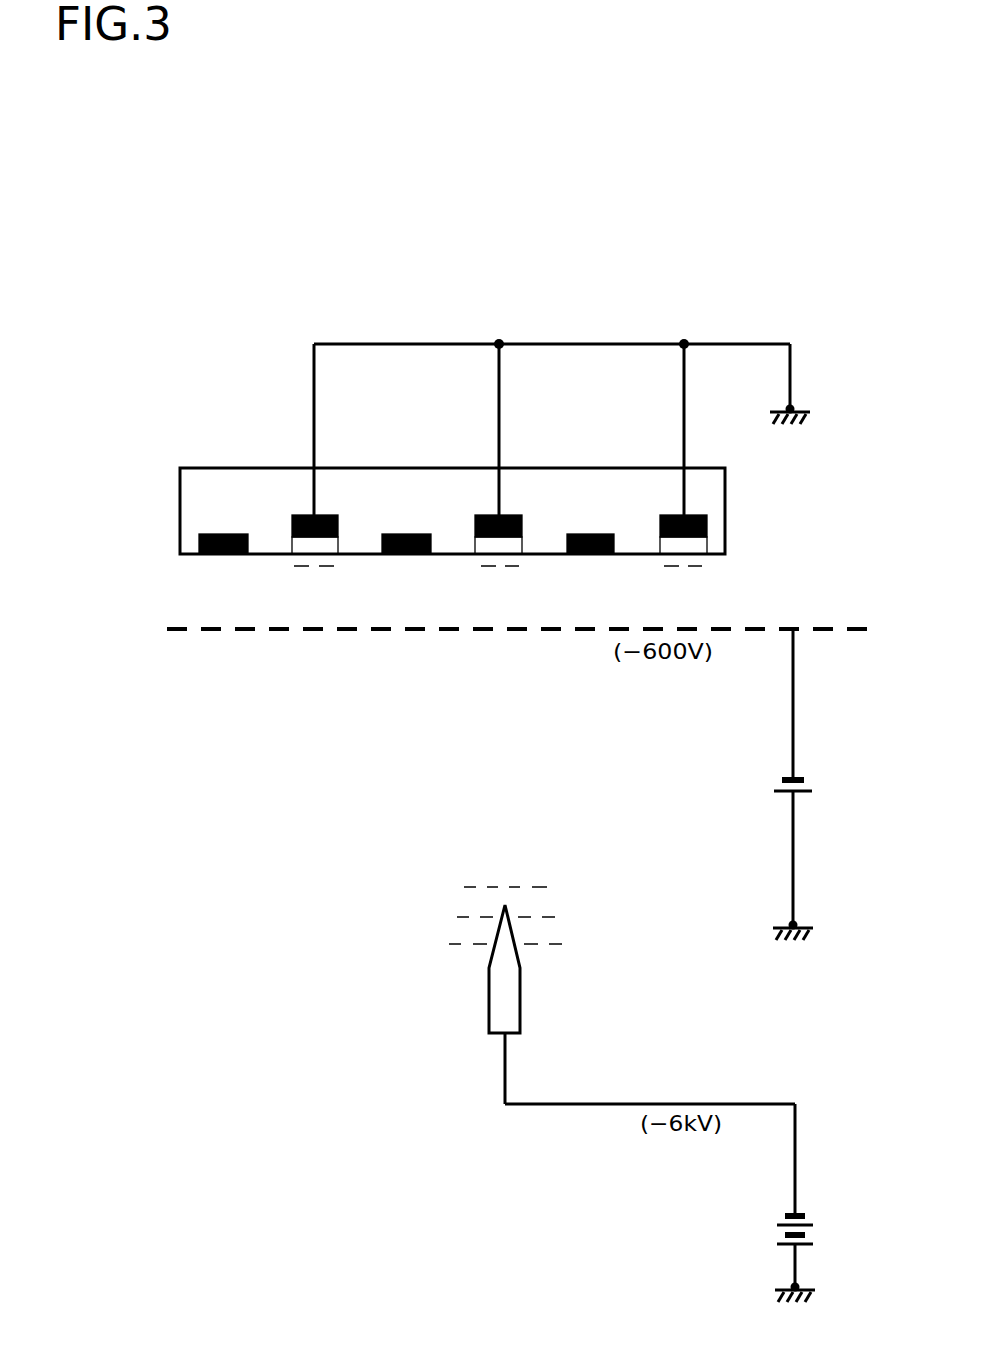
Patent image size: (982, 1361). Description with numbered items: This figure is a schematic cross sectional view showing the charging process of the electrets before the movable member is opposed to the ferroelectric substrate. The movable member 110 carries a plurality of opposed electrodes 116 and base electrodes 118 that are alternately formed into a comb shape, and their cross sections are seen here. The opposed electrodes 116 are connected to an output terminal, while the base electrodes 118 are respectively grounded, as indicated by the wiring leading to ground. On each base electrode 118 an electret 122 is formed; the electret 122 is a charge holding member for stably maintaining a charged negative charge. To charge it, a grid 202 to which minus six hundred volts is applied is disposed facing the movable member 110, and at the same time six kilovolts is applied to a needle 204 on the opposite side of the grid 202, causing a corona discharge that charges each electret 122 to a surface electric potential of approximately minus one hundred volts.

The movable member 110 is at (452, 477).
The opposed electrodes 116 is at (370, 568).
The base electrodes 118 is at (499, 515).
The electret 122 is at (547, 569).
The grid 202 is at (517, 663).
The needle 204 is at (457, 962).